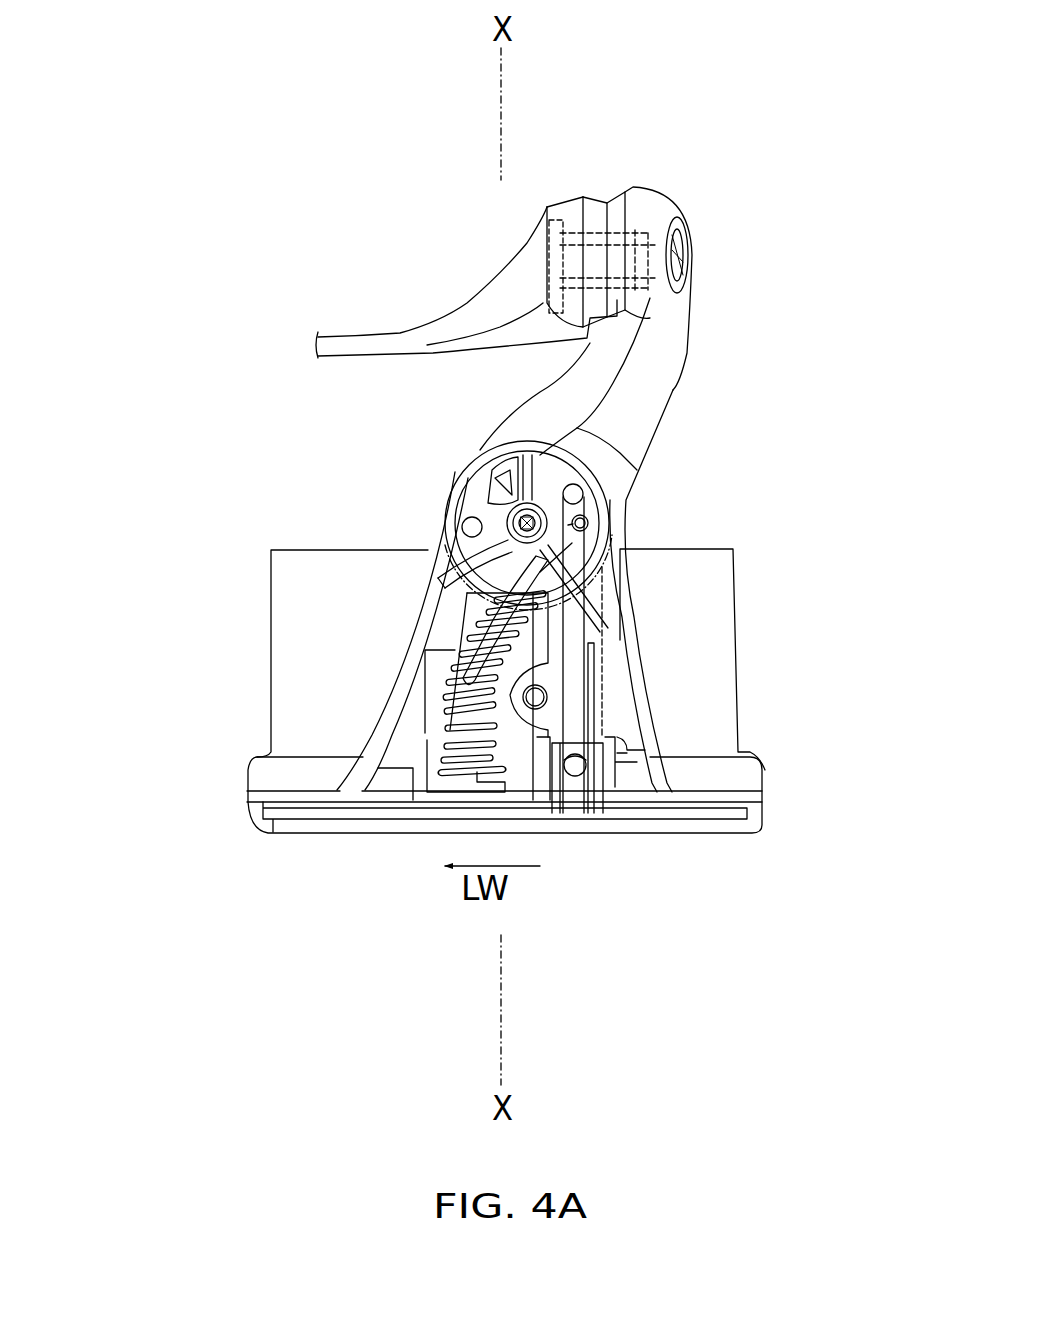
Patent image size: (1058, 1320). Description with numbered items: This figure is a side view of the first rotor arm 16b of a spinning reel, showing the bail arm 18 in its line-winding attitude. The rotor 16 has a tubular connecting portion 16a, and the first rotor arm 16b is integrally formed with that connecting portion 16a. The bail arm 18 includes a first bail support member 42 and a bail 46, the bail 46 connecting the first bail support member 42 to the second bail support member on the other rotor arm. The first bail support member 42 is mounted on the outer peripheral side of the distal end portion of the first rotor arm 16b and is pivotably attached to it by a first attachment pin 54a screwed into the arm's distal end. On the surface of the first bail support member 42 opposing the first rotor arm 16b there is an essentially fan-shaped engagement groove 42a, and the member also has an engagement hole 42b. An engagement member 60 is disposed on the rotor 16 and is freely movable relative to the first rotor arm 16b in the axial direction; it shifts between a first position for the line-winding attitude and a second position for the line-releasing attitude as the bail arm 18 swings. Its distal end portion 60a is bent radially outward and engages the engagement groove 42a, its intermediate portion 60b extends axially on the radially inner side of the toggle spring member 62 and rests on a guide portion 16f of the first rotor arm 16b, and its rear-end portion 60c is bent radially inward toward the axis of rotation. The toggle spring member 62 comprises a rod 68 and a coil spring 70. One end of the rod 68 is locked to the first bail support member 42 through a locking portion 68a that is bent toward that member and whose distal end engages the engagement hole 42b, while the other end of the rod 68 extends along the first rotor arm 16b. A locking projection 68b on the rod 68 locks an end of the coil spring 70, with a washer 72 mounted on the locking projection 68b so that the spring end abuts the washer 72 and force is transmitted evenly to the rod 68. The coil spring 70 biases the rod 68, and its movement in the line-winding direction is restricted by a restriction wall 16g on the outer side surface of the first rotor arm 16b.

The rotor 16 is at (262, 690).
The tubular connecting portion 16a is at (271, 648).
The first rotor arm 16b is at (640, 592).
The guide portion 16f is at (600, 800).
The restriction wall 16g is at (443, 740).
The bail arm 18 is at (387, 237).
The first bail support member 42 is at (690, 367).
The engagement groove 42a is at (480, 455).
The engagement hole 42b is at (588, 523).
The bail 46 is at (590, 203).
The first attachment pin 54a is at (515, 515).
The engagement member 60 is at (592, 628).
The distal end portion 60a is at (583, 490).
The intermediate portion 60b is at (586, 700).
The rear-end portion 60c is at (575, 800).
The toggle spring member 62 is at (458, 618).
The rod 68 is at (455, 640).
The locking portion 68a is at (587, 523).
The locking projection 68b is at (463, 533).
The coil spring 70 is at (443, 650).
The washer 72 is at (478, 580).